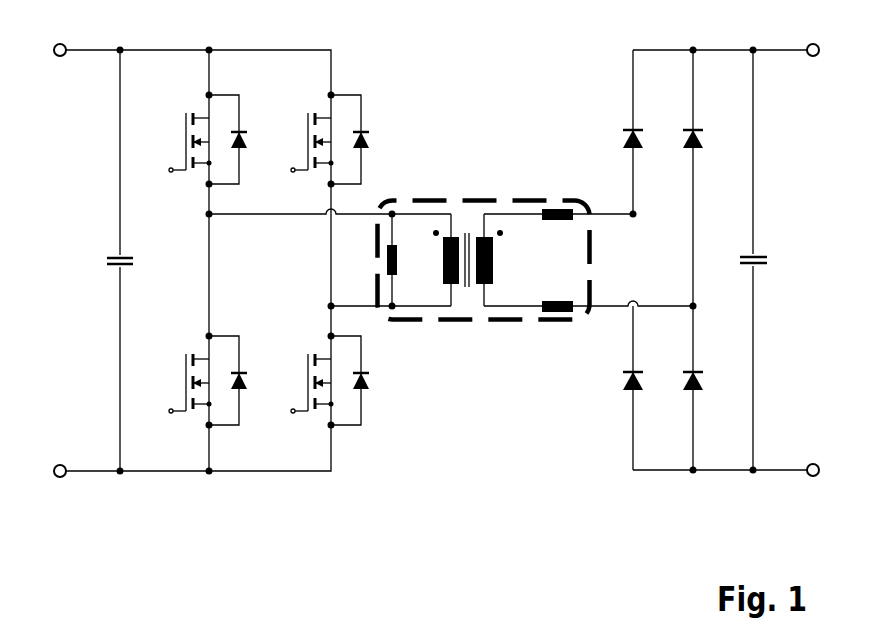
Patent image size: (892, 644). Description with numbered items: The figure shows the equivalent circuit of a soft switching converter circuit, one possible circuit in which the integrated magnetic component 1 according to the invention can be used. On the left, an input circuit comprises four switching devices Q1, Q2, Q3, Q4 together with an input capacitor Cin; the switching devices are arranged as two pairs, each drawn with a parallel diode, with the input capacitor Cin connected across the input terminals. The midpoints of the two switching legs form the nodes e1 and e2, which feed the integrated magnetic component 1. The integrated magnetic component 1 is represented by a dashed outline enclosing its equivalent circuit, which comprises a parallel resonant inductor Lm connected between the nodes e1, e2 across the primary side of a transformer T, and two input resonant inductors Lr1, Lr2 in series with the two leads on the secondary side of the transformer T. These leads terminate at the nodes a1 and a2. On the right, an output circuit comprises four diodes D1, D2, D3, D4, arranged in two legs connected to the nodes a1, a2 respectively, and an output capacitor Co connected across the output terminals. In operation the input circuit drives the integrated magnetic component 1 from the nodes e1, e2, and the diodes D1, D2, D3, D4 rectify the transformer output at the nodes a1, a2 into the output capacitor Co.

The integrated magnetic component 1 is at (465, 204).
The switching device Q1 is at (201, 134).
The switching device Q2 is at (201, 375).
The switching device Q3 is at (323, 134).
The switching device Q4 is at (323, 375).
The diode D1 is at (620, 132).
The diode D2 is at (620, 388).
The diode D3 is at (679, 178).
The diode D4 is at (679, 388).
The input capacitor Cin is at (146, 260).
The output capacitor Co is at (736, 260).
The parallel resonant inductor Lm is at (368, 260).
The input resonant inductor Lr1 is at (561, 238).
The input resonant inductor Lr2 is at (559, 329).
The transformer T is at (468, 253).
The node e1 is at (420, 232).
The node e2 is at (492, 296).
The node a1 is at (648, 232).
The node a2 is at (679, 291).